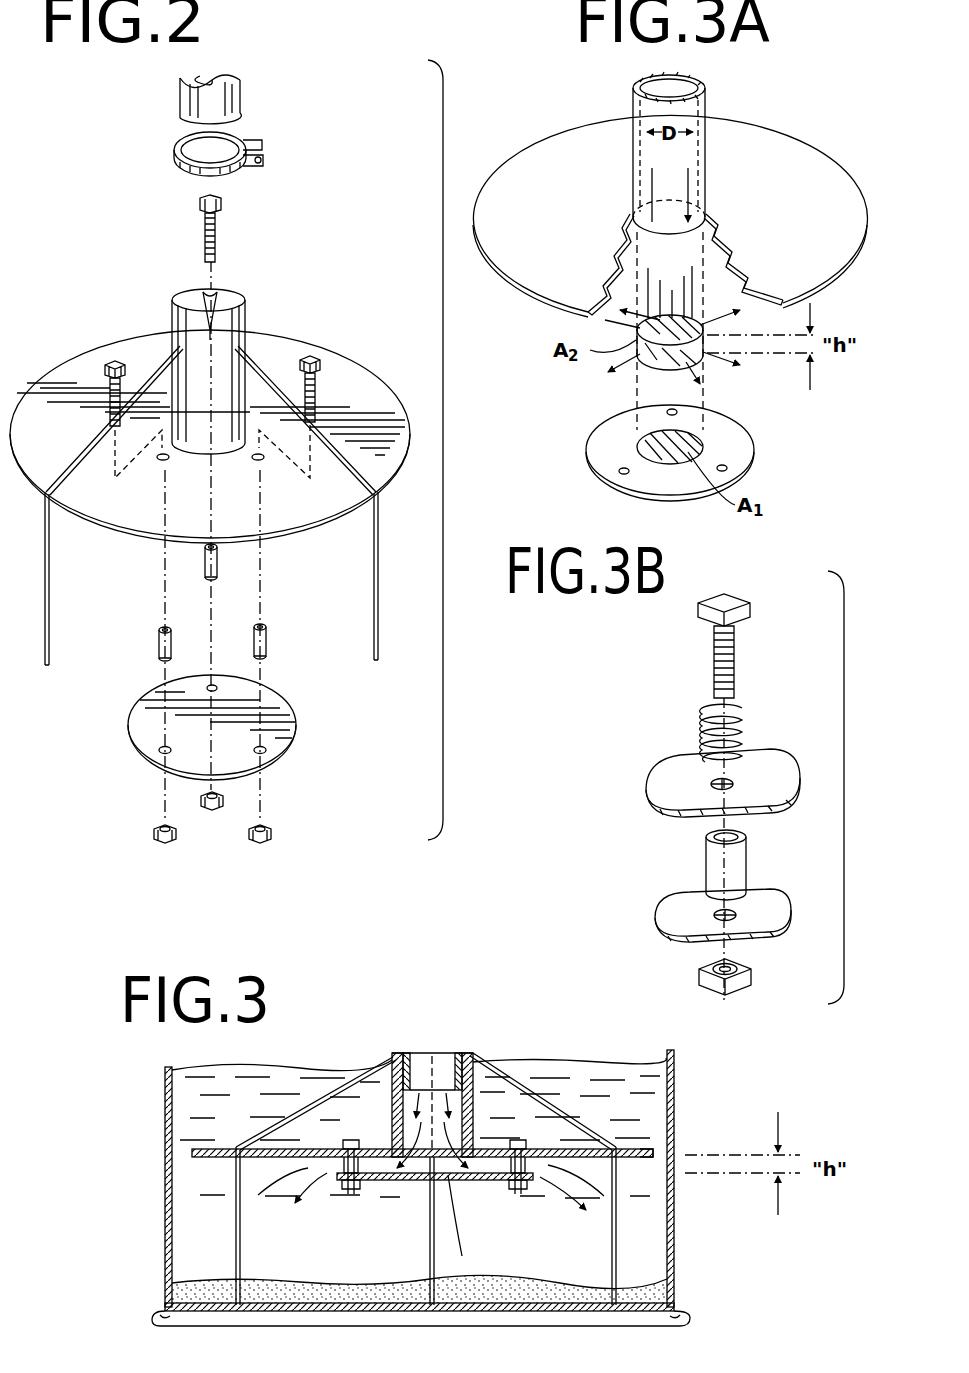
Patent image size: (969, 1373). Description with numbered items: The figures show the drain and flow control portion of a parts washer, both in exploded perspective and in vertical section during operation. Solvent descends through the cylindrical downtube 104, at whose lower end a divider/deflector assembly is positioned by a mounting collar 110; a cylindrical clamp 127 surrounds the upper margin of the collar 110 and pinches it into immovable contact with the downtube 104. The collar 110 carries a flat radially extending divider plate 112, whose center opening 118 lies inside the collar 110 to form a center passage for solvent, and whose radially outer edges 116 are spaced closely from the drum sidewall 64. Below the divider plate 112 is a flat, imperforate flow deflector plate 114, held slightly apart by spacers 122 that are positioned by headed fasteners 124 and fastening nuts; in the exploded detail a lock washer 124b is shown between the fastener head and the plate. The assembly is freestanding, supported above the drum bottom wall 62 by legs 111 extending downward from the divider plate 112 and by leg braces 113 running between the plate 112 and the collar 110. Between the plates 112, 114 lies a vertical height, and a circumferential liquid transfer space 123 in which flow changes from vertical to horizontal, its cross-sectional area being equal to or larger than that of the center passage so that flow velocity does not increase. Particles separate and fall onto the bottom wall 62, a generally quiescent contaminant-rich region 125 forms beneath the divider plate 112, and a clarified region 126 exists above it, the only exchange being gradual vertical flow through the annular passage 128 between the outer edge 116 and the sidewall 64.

In FIG. 2, the downtube 104 is at (240, 100).
In FIG. 2, the cylindrical clamp 127 is at (245, 168).
In FIG. 2, the mounting collar 110 is at (222, 297).
In FIG. 2, the leg braces 113 is at (163, 342).
In FIG. 3, the leg braces 113 is at (547, 1082).
In FIG. 2, the divider plate 112 is at (82, 378).
In FIG. 3B, the divider plate 112 is at (768, 770).
In FIG. 3, the divider plate 112 is at (642, 1150).
In FIG. 2, the legs 111 is at (49, 560).
In FIG. 3, the legs 111 is at (270, 1256).
In FIG. 2, the spacers 122 is at (158, 642).
In FIG. 3B, the spacers 122 is at (748, 846).
In FIG. 3, the spacers 122 is at (484, 1182).
In FIG. 2, the flow deflector plate 114 is at (274, 712).
In FIG. 3B, the flow deflector plate 114 is at (770, 888).
In FIG. 3, the flow deflector plate 114 is at (404, 1180).
In FIG. 3A, the liquid transfer space 123 is at (690, 368).
In FIG. 3, the liquid transfer space 123 is at (462, 1223).
In FIG. 3B, the headed fasteners 124 is at (736, 662).
In FIG. 3, the headed fasteners 124 is at (346, 1143).
In FIG. 3B, the lock washer spring 124b is at (748, 736).
In FIG. 3, the clarified region 126 is at (282, 1082).
In FIG. 3, the center opening 118 is at (457, 1065).
In FIG. 3, the radially outer edges 116 is at (655, 1155).
In FIG. 3, the annular passage 128 is at (180, 1150).
In FIG. 3, the sidewall 64 is at (389, 1188).
In FIG. 3, the contaminant-rich region 125 is at (347, 1243).
In FIG. 3, the drum bottom wall 62 is at (532, 1278).